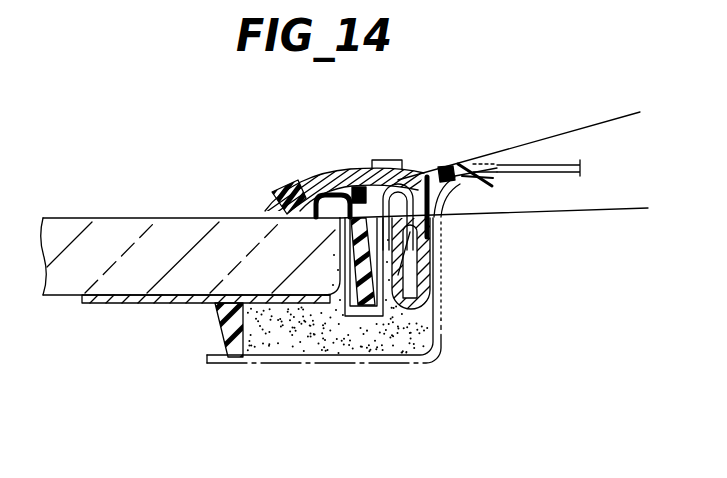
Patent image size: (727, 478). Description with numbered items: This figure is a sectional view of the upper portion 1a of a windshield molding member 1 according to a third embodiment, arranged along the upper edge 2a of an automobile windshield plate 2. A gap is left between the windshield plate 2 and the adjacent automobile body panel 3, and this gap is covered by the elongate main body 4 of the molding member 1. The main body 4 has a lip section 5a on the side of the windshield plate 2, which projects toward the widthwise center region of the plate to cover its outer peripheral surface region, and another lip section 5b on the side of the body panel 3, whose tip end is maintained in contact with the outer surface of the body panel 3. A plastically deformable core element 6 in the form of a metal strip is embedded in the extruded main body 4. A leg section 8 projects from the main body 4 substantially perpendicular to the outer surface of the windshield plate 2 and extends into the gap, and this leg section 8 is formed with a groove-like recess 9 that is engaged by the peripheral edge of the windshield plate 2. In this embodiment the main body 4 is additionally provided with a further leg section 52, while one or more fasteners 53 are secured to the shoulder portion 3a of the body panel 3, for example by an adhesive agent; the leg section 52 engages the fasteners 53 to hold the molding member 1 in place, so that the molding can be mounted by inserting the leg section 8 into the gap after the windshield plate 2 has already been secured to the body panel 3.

The molding member 1 is at (350, 158).
The upper portion 1a is at (437, 170).
The windshield plate 2 is at (72, 230).
The upper edge 2a is at (187, 218).
The body panel 3 is at (562, 165).
The shoulder portion 3a is at (440, 283).
The main body 4 is at (396, 157).
The lip section 5a is at (277, 172).
The lip section 5b is at (465, 170).
The core element 6 is at (313, 172).
The leg section 8 is at (365, 305).
The groove-like recess 9 is at (307, 303).
The leg section 52 is at (437, 243).
The fasteners 53 is at (432, 314).